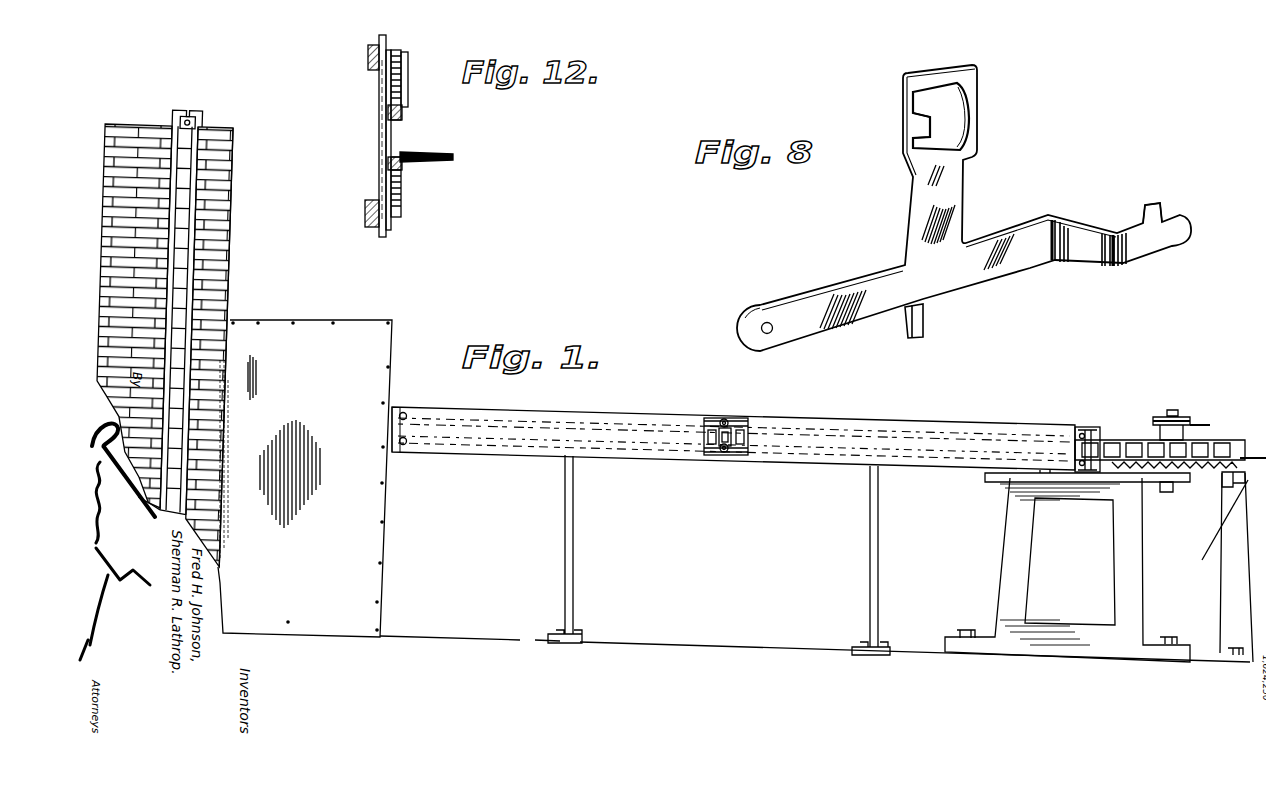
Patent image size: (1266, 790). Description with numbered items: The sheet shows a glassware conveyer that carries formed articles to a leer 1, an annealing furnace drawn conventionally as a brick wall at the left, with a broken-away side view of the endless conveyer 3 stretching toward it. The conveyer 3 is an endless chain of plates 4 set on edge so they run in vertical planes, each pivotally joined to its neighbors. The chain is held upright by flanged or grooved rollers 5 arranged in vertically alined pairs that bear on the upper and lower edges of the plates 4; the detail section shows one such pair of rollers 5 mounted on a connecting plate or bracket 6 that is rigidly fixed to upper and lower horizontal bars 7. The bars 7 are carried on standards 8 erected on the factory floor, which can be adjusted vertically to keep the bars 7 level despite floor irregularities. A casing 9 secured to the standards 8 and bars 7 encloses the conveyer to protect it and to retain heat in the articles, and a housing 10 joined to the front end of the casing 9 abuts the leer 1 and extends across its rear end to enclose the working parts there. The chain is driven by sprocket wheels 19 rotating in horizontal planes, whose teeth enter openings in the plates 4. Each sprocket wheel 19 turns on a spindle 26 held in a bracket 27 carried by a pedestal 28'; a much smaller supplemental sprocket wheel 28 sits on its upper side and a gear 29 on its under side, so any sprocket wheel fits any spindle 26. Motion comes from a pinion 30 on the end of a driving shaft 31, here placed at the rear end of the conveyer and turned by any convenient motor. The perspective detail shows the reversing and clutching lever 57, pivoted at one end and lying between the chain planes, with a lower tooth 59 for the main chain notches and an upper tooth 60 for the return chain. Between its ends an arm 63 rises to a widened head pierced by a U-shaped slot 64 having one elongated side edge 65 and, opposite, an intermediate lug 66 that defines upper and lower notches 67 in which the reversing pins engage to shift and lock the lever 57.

In FIG. 1, the leer 1 is at (138, 130).
In FIG. 1, the endless conveyer 3 is at (1093, 428).
In FIG. 12, the plates 4 is at (382, 115).
In FIG. 1, the rollers 5 is at (726, 456).
In FIG. 12, the rollers 5 is at (407, 58).
In FIG. 1, the connecting plates or brackets 6 is at (733, 418).
In FIG. 12, the connecting plates or brackets 6 is at (382, 145).
In FIG. 1, the horizontal bars 7 is at (712, 418).
In FIG. 12, the horizontal bars 7 is at (368, 49).
In FIG. 1, the standards 8 is at (575, 550).
In FIG. 1, the casing 9 is at (806, 422).
In FIG. 1, the housing 10 is at (305, 478).
In FIG. 1, the driving sprocket wheels 19 is at (1130, 440).
In FIG. 1, the spindles 26 is at (1176, 410).
In FIG. 1, the brackets 27 is at (1147, 484).
In FIG. 1, the supplemental sprocket wheel 28 is at (1215, 420).
In FIG. 1, the pedestals 28' is at (1067, 570).
In FIG. 1, the gear 29 is at (1210, 485).
In FIG. 1, the pinion 30 is at (1226, 486).
In FIG. 1, the driving shaft 31 is at (1218, 530).
In FIG. 8, the reversing and clutching lever 57 is at (964, 208).
In FIG. 8, the tooth 59 is at (915, 338).
In FIG. 8, the tooth 60 is at (1158, 203).
In FIG. 8, the arm 63 is at (957, 193).
In FIG. 8, the slot or opening 64 is at (958, 110).
In FIG. 8, the elongated side edge 65 is at (967, 132).
In FIG. 8, the intermediate lug or tooth 66 is at (928, 120).
In FIG. 8, the notches 67 is at (918, 100).